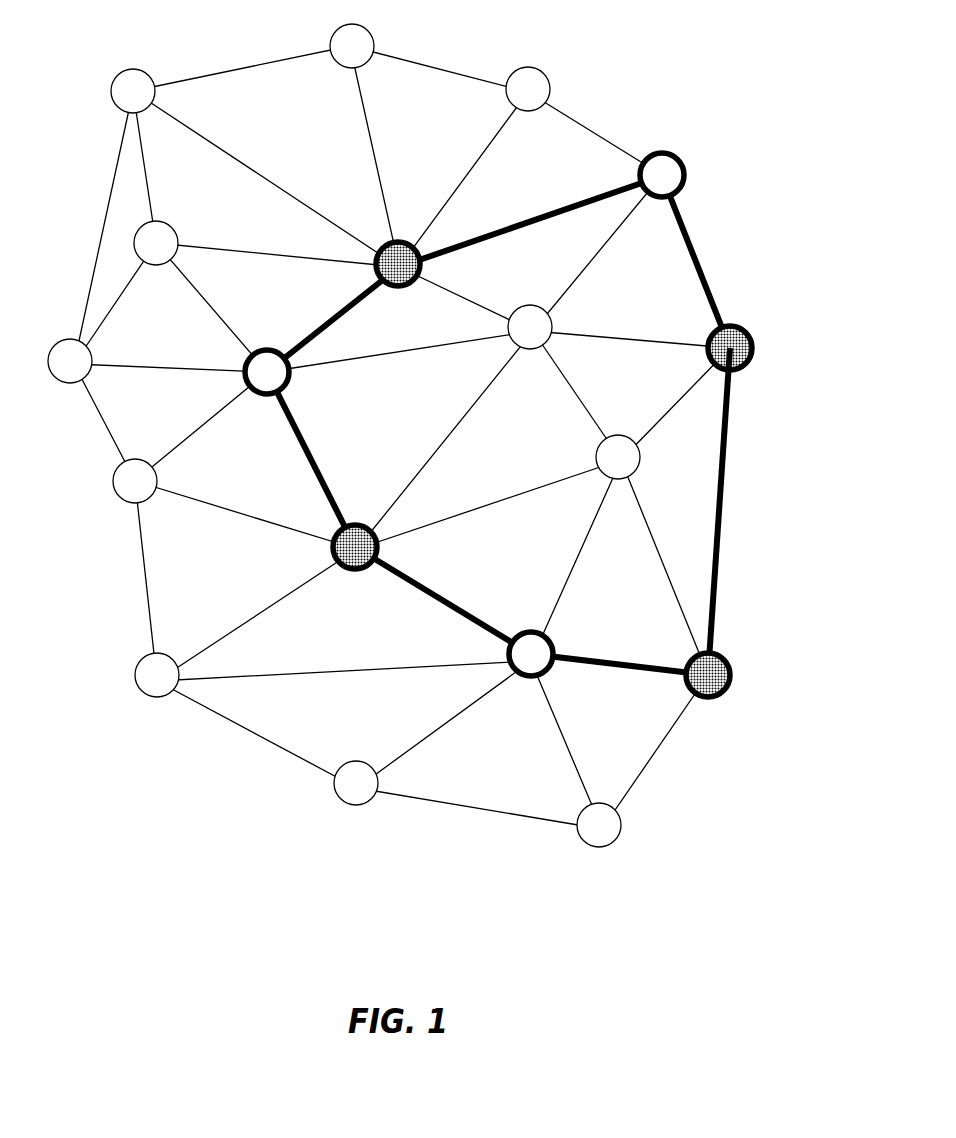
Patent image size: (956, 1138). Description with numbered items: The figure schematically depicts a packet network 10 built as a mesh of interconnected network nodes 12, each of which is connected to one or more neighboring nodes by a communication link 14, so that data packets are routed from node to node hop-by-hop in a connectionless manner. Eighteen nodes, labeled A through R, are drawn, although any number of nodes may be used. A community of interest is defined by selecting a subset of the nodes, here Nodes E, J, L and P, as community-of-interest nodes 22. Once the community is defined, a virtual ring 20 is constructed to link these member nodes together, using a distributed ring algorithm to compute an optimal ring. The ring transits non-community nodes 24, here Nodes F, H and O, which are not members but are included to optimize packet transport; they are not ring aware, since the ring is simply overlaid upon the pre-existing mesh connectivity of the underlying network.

The packet network 10 is at (425, 454).
The network node 12 is at (117, 483).
The communication link 14 is at (142, 554).
The virtual ring 20 is at (722, 530).
The community-of-interest node 22 is at (732, 665).
The non-community node 24 is at (683, 162).